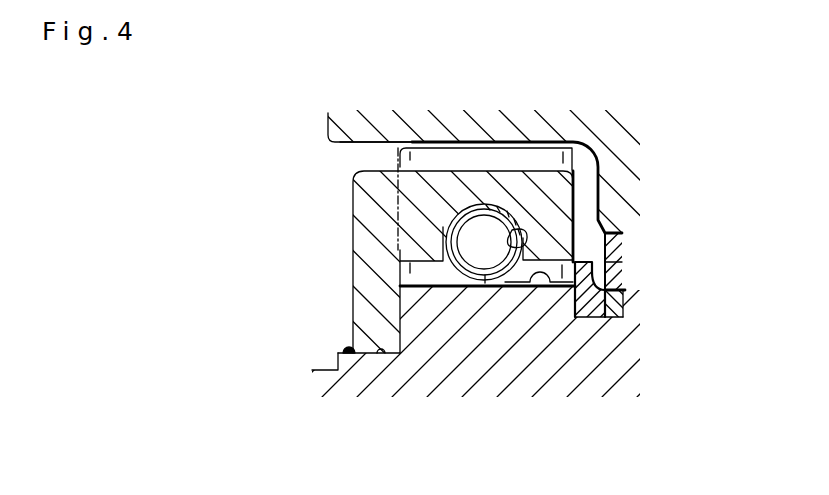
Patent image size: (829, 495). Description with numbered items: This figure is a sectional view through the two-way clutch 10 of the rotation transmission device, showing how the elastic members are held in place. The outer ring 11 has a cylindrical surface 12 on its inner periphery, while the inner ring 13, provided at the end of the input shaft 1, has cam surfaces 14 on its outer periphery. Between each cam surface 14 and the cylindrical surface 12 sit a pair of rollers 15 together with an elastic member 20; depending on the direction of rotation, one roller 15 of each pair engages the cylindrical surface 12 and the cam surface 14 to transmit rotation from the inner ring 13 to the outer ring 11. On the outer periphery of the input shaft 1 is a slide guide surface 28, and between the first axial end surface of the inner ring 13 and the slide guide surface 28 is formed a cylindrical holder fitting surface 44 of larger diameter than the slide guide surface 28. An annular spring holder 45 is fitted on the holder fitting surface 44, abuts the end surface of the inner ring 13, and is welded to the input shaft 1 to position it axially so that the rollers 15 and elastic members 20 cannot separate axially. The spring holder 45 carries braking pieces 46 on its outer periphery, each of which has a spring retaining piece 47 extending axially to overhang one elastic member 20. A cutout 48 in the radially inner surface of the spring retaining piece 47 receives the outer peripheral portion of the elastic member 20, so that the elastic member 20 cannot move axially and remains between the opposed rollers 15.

The input shaft 1 is at (322, 384).
The two-way clutch 10 is at (414, 108).
The outer ring 11 is at (340, 122).
The cylindrical surface 12 is at (362, 147).
The inner ring 13 is at (510, 325).
The cam surface 14 is at (556, 298).
The roller 15 is at (517, 150).
The elastic member 20 is at (448, 283).
The slide guide surface 28 is at (328, 370).
The holder fitting surface 44 is at (400, 357).
The spring holder 45 is at (362, 298).
The braking piece 46 is at (363, 199).
The spring retaining piece 47 is at (561, 197).
The cutout 48 is at (511, 247).